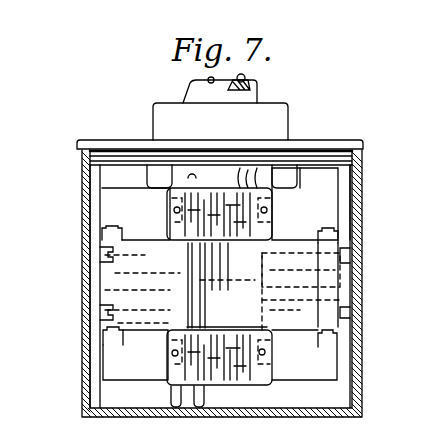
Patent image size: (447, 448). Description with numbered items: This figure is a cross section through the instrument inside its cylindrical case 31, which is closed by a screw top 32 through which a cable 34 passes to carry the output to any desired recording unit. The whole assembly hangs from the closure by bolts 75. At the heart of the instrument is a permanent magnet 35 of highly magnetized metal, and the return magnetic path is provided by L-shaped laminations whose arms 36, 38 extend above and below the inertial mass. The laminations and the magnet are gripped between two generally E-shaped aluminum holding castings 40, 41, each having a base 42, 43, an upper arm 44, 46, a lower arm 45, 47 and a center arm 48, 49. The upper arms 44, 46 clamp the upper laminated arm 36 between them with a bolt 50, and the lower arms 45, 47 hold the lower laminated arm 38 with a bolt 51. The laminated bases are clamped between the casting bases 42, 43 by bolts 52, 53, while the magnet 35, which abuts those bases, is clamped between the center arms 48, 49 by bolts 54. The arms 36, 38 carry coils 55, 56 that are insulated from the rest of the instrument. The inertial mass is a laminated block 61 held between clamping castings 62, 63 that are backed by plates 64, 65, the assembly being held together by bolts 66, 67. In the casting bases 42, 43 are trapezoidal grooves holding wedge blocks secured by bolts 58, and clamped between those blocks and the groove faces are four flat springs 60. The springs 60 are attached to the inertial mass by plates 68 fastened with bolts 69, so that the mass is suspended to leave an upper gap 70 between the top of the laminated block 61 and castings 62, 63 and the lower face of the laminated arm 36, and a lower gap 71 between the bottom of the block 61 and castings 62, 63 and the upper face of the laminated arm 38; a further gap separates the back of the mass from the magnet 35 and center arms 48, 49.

The cylindrical case 31 is at (342, 413).
The screw top 32 is at (284, 140).
The cable 34 is at (250, 82).
The permanent magnet 35 is at (299, 268).
The laminated arm 36 is at (222, 178).
The laminated arm 38 is at (233, 386).
The holding casting 40 is at (330, 195).
The holding casting 41 is at (110, 189).
The base 42 is at (287, 236).
The base 43 is at (136, 214).
The upper arm 44 is at (300, 180).
The lower arm 45 is at (255, 386).
The upper arm 46 is at (170, 194).
The lower arm 47 is at (170, 388).
The center arm 48 is at (290, 300).
The center arm 49 is at (115, 252).
The bolt 50 is at (268, 207).
The bolt 51 is at (268, 353).
The bolt 52 is at (288, 218).
The bolt 53 is at (210, 413).
The bolts 54 is at (88, 277).
The coil 55 is at (262, 186).
The coil 56 is at (275, 383).
The bolts 58 is at (90, 325).
The flat springs 60 is at (102, 234).
The laminated block 61 is at (186, 297).
The casting 62 is at (145, 344).
The casting 63 is at (282, 320).
The plate 64 is at (135, 355).
The plate 65 is at (332, 268).
The bolt 66 is at (100, 254).
The bolt 67 is at (100, 305).
The plates 68 is at (103, 230).
The bolts 69 is at (113, 226).
The upper gap 70 is at (200, 250).
The lower gap 71 is at (187, 327).
The bolt 75 is at (156, 170).